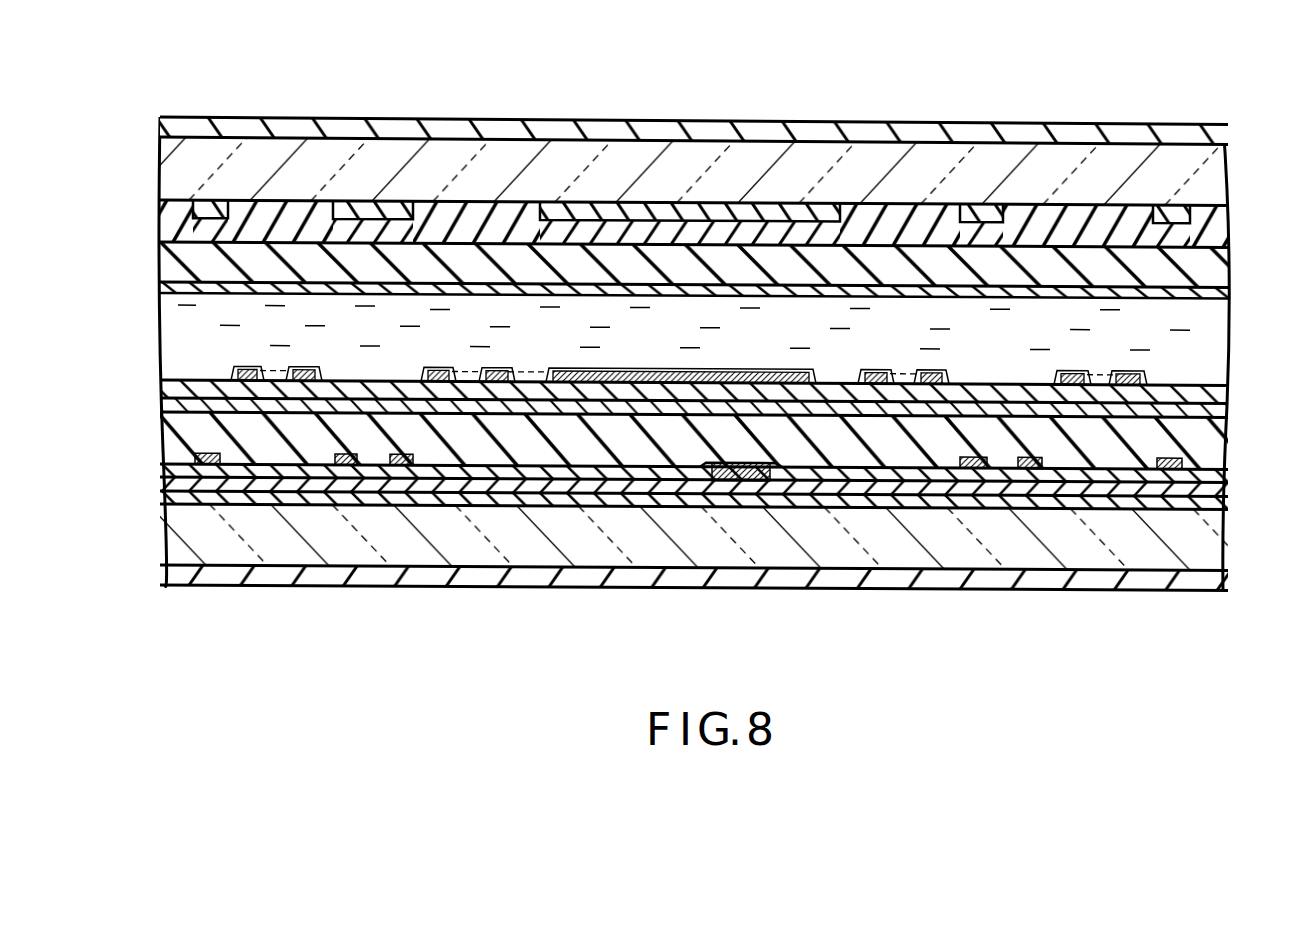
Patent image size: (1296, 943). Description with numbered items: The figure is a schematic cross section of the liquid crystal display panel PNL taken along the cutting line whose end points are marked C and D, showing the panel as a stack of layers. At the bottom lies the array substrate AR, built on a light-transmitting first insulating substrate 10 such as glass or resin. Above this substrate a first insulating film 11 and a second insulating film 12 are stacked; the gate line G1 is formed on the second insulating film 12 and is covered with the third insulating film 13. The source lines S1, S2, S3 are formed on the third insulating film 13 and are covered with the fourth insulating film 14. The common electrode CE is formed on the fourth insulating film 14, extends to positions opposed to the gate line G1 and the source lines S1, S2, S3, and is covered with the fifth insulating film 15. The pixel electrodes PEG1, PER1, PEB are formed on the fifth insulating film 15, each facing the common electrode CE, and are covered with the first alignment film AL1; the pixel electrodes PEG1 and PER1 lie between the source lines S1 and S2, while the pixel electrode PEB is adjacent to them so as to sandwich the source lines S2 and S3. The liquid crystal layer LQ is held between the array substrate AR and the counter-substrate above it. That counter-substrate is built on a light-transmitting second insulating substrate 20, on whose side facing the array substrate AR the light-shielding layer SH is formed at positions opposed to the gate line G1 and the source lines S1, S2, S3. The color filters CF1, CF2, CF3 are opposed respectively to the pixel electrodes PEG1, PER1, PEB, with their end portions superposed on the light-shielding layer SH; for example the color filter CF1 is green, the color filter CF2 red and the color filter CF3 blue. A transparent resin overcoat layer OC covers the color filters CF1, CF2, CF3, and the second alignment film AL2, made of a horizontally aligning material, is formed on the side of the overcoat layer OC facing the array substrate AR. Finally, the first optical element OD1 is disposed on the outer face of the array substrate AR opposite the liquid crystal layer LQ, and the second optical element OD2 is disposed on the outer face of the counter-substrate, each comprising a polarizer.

The liquid crystal display panel PNL is at (143, 126).
The light-shielding layer SH is at (212, 203).
The color filter CF1 is at (290, 215).
The color filter CF2 is at (1097, 218).
The color filter CF3 is at (487, 215).
The second optical element OD2 is at (1229, 126).
The second insulating substrate 20 is at (170, 172).
The overcoat layer OC is at (172, 266).
The second alignment film AL2 is at (1196, 299).
The liquid crystal layer LQ is at (1203, 336).
The first alignment film AL1 is at (1196, 382).
The array substrate AR is at (1221, 447).
The fifth insulating film 15 is at (172, 395).
The fourth insulating film 14 is at (172, 437).
The third insulating film 13 is at (172, 470).
The second insulating film 12 is at (172, 484).
The first insulating film 11 is at (172, 498).
The first insulating substrate 10 is at (172, 543).
The first optical element OD1 is at (1200, 582).
The section line end point C is at (160, 369).
The section line end point D is at (1221, 375).
The source line S1 is at (206, 466).
The source line S2 is at (346, 466).
The source line S3 is at (402, 466).
The pixel electrode PEG1 is at (293, 382).
The pixel electrode PEB is at (489, 384).
The pixel electrode PER1 is at (1127, 388).
The common electrode CE is at (612, 410).
The gate line G1 is at (742, 482).